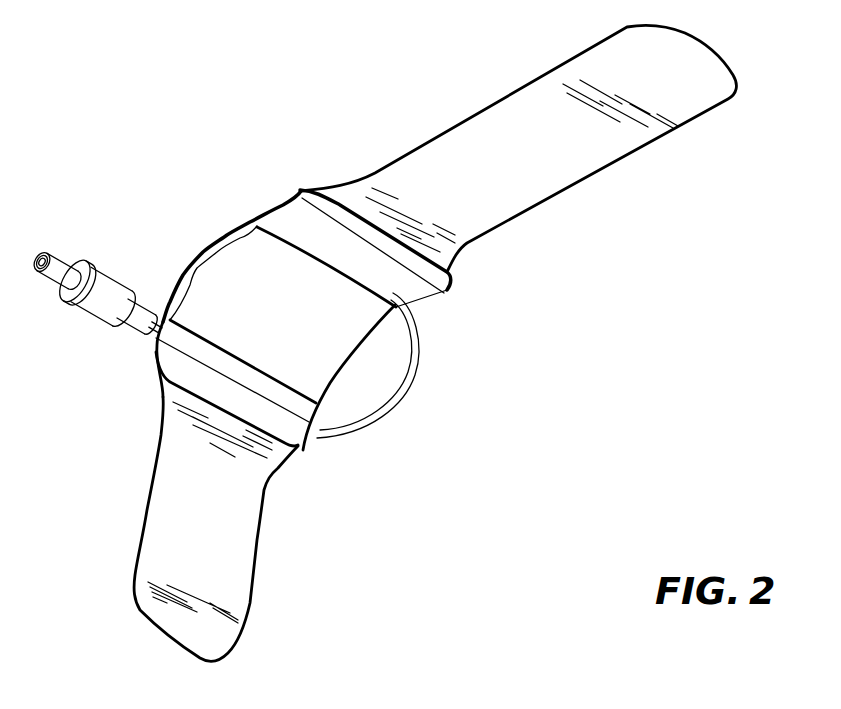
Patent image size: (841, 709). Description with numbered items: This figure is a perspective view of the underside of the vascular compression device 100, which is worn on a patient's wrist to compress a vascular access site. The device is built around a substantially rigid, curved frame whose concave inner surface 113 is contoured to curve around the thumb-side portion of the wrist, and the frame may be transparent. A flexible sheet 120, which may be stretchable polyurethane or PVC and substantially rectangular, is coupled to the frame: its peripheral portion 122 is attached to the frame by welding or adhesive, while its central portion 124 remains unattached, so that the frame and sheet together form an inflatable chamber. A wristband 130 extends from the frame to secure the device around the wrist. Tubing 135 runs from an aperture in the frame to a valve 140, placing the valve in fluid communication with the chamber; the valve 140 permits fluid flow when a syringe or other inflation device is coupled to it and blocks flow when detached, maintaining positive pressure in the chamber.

The vascular compression device 100 is at (522, 339).
The inner surface 113 is at (290, 220).
The flexible sheet 120 is at (285, 327).
The peripheral portion 122 is at (195, 257).
The central portion 124 is at (310, 362).
The wristband 130 is at (648, 168).
The tubing 135 is at (350, 441).
The valve 140 is at (83, 313).